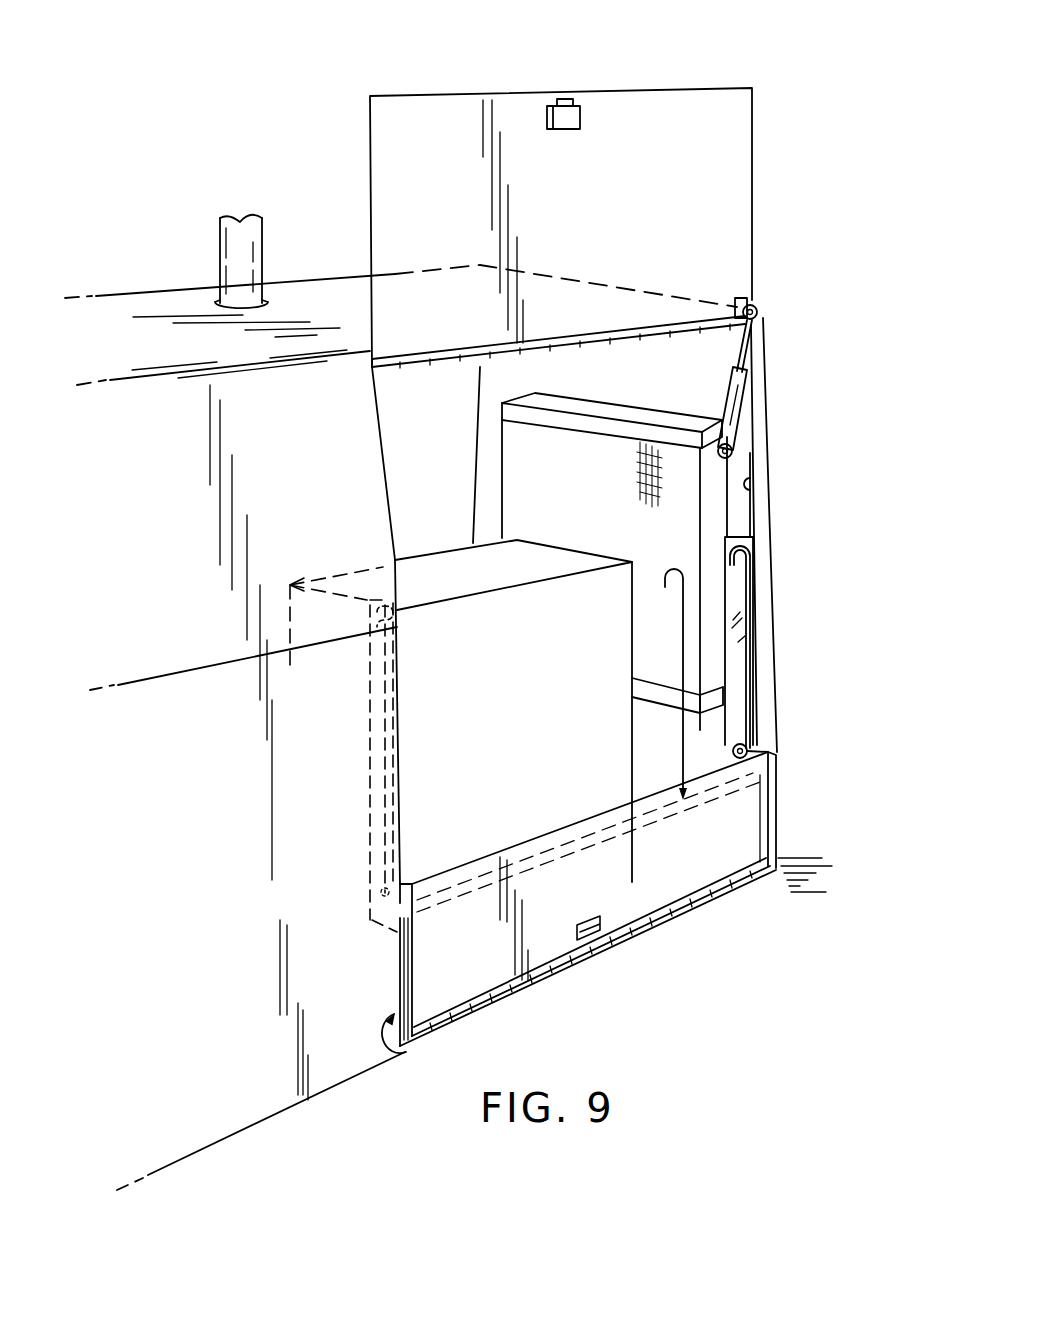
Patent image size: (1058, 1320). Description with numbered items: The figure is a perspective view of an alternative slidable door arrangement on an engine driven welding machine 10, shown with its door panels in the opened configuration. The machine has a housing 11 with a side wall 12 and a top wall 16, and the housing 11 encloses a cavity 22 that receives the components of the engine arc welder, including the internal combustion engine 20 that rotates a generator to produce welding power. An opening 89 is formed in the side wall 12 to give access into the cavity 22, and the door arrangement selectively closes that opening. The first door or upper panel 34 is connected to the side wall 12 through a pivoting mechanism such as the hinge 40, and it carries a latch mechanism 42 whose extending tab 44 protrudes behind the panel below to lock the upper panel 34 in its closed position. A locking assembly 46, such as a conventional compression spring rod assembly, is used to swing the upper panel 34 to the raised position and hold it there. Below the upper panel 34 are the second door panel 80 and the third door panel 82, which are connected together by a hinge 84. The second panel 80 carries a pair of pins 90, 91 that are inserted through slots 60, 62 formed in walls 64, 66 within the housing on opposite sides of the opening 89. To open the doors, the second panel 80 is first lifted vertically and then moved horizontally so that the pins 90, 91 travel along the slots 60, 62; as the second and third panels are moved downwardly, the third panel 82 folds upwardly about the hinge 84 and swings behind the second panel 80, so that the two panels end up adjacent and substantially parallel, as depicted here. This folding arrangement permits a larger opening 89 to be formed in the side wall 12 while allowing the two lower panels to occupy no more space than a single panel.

The engine driven welding machine 10 is at (188, 246).
The housing 11 is at (318, 1062).
The side wall 12 is at (243, 1088).
The top wall 16 is at (150, 310).
The internal combustion engine 20 is at (426, 570).
The cavity 22 is at (418, 433).
The first door or upper panel 34 is at (750, 162).
The hinge 40 is at (448, 353).
The latch mechanism 42 is at (575, 116).
The extending tab 44 is at (566, 98).
The locking assembly 46 is at (748, 403).
The slot 60 is at (390, 690).
The slot 62 is at (743, 610).
The wall 64 is at (372, 743).
The wall 66 is at (733, 663).
The second door panel 80 is at (738, 825).
The third door panel 82 is at (397, 972).
The hinge 84 is at (450, 1017).
The opening 89 is at (752, 487).
The pin 90 is at (381, 893).
The pin 91 is at (770, 735).